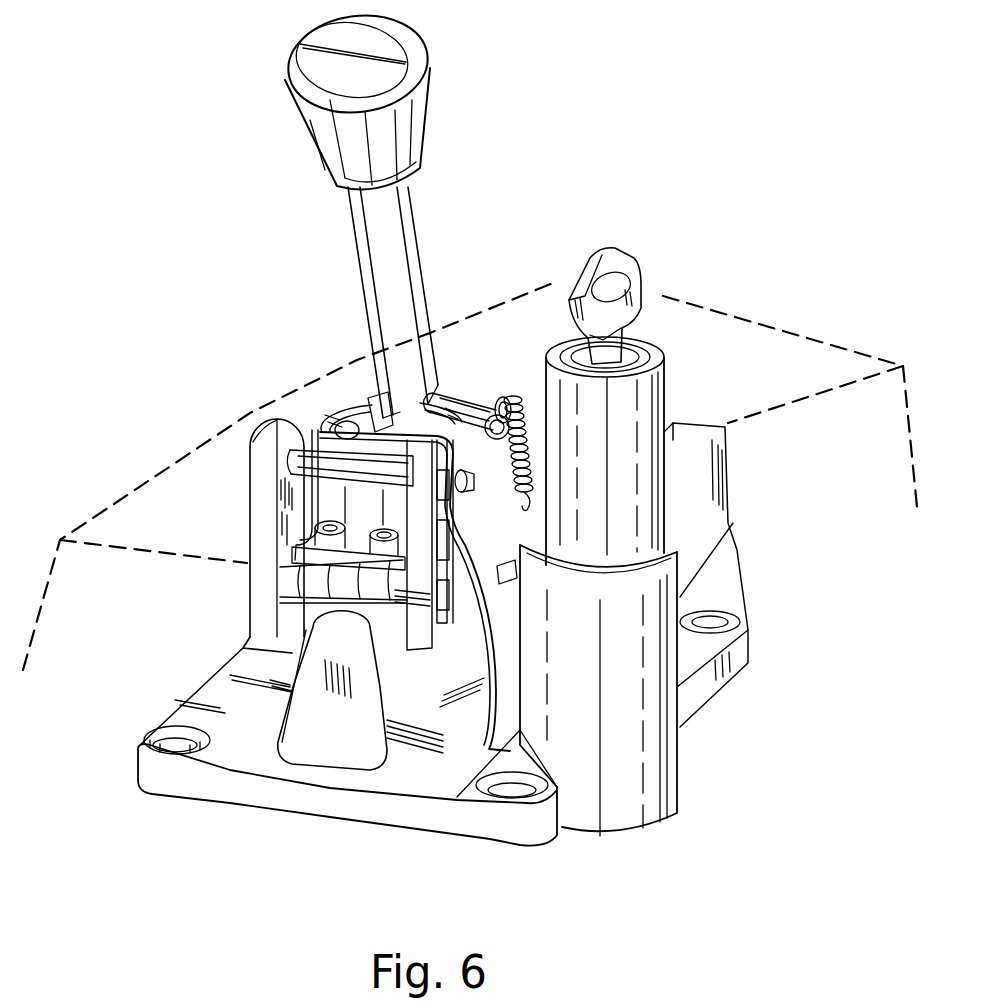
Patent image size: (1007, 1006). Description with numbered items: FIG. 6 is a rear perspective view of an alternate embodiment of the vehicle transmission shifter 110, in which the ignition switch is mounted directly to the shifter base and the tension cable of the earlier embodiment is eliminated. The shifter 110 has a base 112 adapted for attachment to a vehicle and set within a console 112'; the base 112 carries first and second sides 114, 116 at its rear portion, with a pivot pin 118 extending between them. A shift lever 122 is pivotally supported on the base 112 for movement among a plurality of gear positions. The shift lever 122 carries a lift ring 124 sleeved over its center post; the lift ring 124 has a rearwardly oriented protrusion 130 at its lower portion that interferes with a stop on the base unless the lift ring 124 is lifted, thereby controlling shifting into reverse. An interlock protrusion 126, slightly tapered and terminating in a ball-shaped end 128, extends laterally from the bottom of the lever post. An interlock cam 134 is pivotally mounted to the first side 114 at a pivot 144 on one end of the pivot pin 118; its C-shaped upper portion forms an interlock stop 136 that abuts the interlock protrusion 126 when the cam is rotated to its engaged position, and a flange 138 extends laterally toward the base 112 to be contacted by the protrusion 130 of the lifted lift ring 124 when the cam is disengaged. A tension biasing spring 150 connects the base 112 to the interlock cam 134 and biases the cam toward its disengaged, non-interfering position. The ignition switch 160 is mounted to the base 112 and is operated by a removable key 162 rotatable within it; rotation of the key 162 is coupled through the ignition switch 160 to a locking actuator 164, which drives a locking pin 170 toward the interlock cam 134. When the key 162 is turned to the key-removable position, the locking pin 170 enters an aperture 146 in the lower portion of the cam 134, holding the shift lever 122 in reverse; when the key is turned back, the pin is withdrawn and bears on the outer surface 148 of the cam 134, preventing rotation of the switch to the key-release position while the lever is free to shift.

The shifter 110 is at (243, 220).
The base 112 is at (736, 575).
The phantom enclosure outline 112' is at (470, 476).
The first side 114 is at (480, 593).
The second side 116 is at (248, 483).
The pivot pin 118 is at (450, 436).
The shift lever 122 is at (346, 233).
The lift ring 124 is at (411, 214).
The interlock protrusion 126 is at (450, 382).
The ball-shaped end 128 is at (503, 393).
The rearwardly oriented protrusion 130 is at (373, 413).
The interlock cam 134 is at (480, 550).
The interlock stop 136 is at (493, 393).
The flange 138 is at (382, 428).
The pivot 144 is at (452, 523).
The aperture 146 is at (493, 562).
The outer surface 148 is at (515, 556).
The tension biasing spring 150 is at (533, 398).
The ignition switch 160 is at (667, 395).
The key 162 is at (643, 288).
The locking actuator 164 is at (680, 757).
The locking pin 170 is at (482, 592).